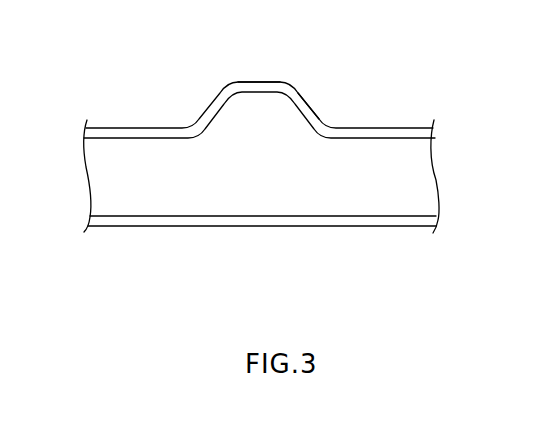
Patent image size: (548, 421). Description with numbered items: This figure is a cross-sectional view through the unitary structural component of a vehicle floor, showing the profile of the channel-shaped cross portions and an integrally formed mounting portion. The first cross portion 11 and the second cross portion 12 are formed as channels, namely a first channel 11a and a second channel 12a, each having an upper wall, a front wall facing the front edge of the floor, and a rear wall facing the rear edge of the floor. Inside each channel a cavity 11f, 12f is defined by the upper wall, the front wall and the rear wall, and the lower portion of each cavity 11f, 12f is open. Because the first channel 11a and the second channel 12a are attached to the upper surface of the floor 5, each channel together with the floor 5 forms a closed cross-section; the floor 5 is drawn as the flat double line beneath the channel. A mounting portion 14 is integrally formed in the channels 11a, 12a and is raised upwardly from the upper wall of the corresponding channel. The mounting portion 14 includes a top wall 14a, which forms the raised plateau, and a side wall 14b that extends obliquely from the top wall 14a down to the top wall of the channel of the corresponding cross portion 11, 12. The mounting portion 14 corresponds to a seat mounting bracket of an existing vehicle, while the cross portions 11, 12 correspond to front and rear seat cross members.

The first cross portion 11 is at (266, 127).
The second cross portion 12 is at (266, 127).
The first channel 11a is at (68, 155).
The second channel 12a is at (117, 128).
The cavity 11f is at (459, 176).
The cavity 12f is at (407, 182).
The mounting portion 14 is at (299, 70).
The top wall 14a is at (271, 87).
The side wall 14b is at (298, 102).
The floor 5 is at (270, 218).